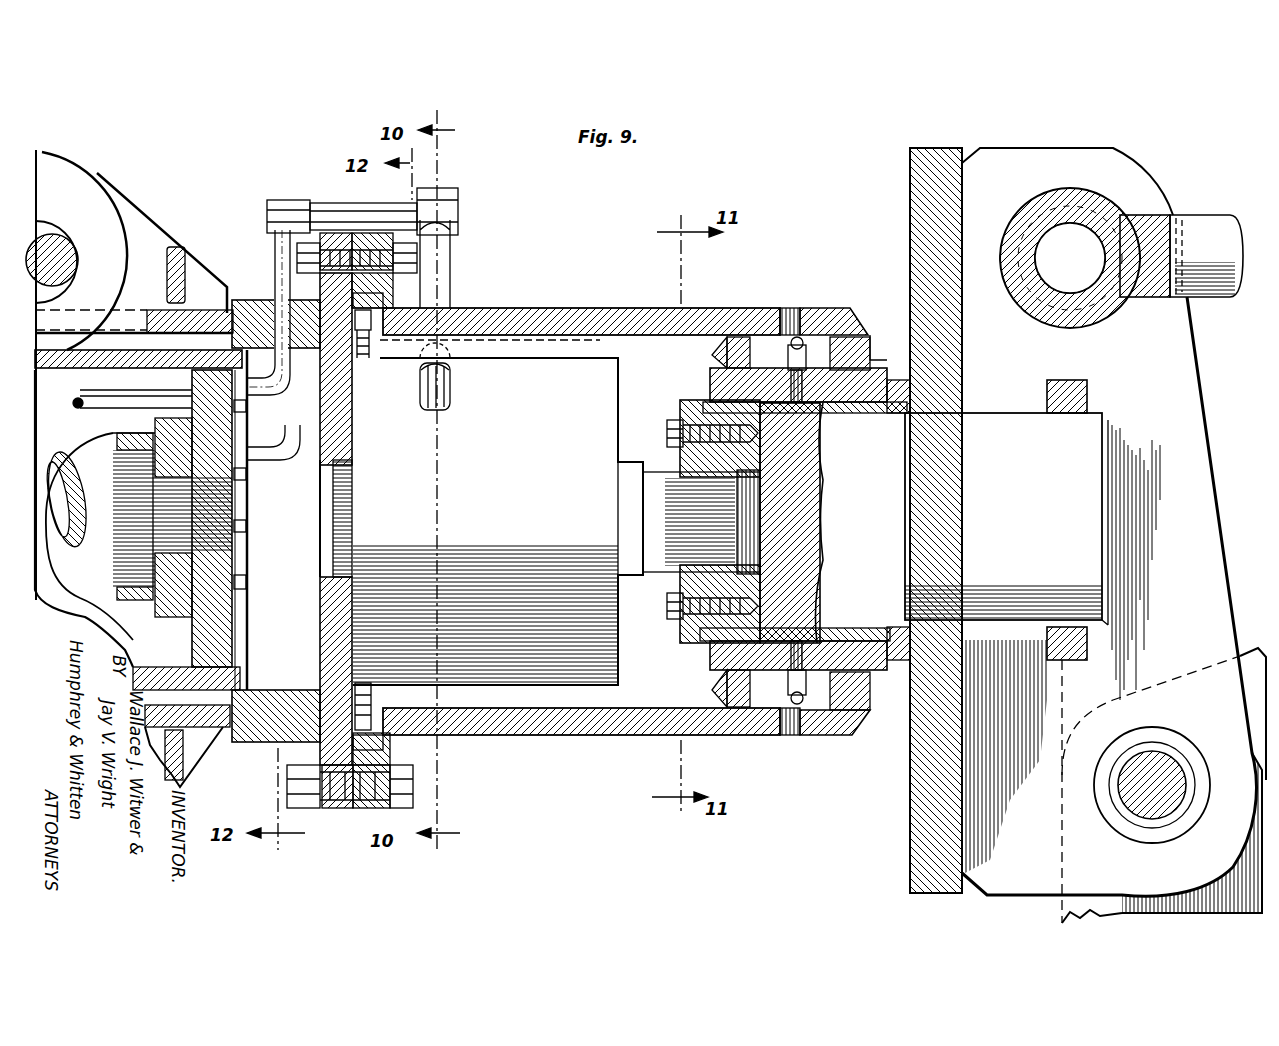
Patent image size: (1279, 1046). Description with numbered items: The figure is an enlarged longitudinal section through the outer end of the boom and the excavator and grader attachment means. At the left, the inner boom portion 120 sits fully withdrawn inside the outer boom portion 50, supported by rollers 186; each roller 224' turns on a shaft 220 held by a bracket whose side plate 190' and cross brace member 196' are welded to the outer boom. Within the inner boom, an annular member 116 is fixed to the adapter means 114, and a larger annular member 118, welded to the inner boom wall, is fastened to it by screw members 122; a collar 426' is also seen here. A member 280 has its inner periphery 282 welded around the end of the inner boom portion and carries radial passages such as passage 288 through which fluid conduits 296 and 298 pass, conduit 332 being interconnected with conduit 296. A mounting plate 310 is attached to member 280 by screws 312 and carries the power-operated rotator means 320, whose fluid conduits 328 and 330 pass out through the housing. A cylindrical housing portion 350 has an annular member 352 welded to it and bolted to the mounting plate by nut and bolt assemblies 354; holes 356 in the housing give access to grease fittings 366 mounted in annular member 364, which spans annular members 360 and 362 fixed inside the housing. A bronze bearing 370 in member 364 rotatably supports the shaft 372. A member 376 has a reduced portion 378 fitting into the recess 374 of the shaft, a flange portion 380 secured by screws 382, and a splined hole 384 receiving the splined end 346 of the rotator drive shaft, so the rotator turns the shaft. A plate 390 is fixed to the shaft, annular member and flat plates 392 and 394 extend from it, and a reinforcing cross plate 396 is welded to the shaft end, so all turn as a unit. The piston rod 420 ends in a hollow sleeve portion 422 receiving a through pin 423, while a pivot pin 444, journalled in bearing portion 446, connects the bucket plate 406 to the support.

The rollers 186 is at (177, 198).
The side plate 190' is at (86, 237).
The roller 224' is at (162, 232).
The shaft 220 is at (58, 233).
The cross brace member 196' is at (199, 260).
The outer boom portion 50 is at (174, 334).
The inner boom portion 120 is at (78, 370).
The collar 426' is at (117, 413).
The adapter means 114 is at (119, 598).
The annular member 116 is at (170, 610).
The annular member 118 is at (222, 646).
The screw members 122 is at (247, 570).
The inner periphery 282 is at (258, 690).
The radial passage 288 is at (277, 313).
The member 280 is at (247, 730).
The fluid conduit 296 is at (275, 253).
The fluid conduit 298 is at (270, 471).
The fluid conduit 332 is at (335, 210).
The annular member 352 is at (370, 235).
The nut and bolt assemblies 354 is at (417, 263).
The screws 312 is at (367, 359).
The mounting plate 310 is at (350, 444).
The power-operated rotator means 320 is at (553, 357).
The fluid conduit 328 is at (450, 351).
The fluid conduit 330 is at (450, 388).
The cylindrical housing portion 350 is at (640, 307).
The holes 356 is at (803, 309).
The annular member 362 is at (877, 340).
The annular member 360 is at (727, 353).
The grease fittings 366 is at (792, 358).
The annular member 364 is at (717, 379).
The bronze bearing 370 is at (707, 634).
The annular member / flat plate 392 is at (927, 414).
The reinforcing cross plate 396 is at (1087, 388).
The shaft 372 is at (945, 516).
The member 376 is at (680, 572).
The flange portion 380 is at (690, 647).
The reduced portion 378 is at (772, 572).
The recess 374 is at (823, 447).
The screws 382 is at (673, 420).
The splined end 346 is at (661, 493).
The splined hole 384 is at (777, 550).
The plate 390 is at (917, 215).
The flat plate 394 is at (1182, 363).
The plate 406 is at (1073, 908).
The hollow sleeve portion 422 is at (1087, 200).
The through pin 423 is at (1053, 237).
The piston rod 420 is at (1208, 225).
The pivot pin 444 is at (1160, 763).
The bearing portion 446 is at (1168, 836).